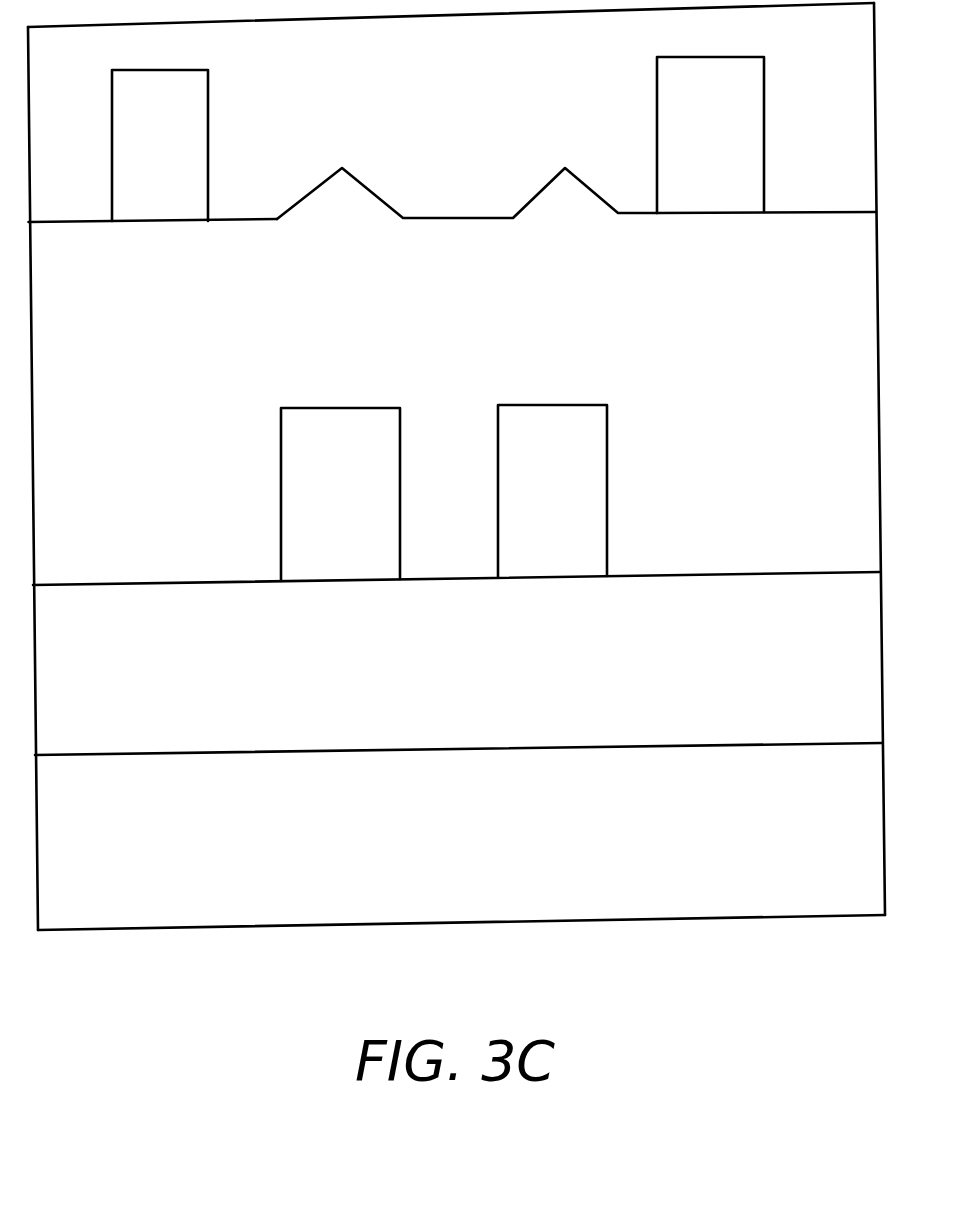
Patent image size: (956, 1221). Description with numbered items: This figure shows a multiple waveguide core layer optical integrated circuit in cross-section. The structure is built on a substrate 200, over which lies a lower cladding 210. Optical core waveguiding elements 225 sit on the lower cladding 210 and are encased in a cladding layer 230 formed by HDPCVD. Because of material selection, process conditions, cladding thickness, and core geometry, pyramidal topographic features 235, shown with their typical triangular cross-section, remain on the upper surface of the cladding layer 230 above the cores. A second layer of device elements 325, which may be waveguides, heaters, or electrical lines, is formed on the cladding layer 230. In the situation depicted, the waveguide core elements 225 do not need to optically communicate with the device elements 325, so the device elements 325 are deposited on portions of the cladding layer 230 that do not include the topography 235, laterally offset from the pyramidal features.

The substrate 200 is at (633, 852).
The lower cladding 210 is at (708, 697).
The optical core waveguiding elements 225 is at (378, 455).
The cladding layer 230 is at (453, 276).
The pyramidal topographic features 235 is at (393, 202).
The device elements 325 is at (128, 143).